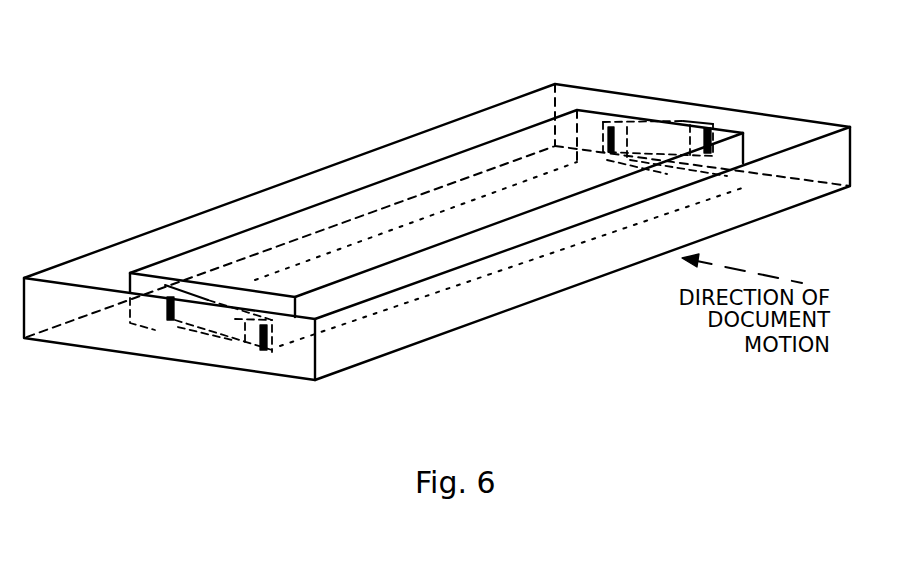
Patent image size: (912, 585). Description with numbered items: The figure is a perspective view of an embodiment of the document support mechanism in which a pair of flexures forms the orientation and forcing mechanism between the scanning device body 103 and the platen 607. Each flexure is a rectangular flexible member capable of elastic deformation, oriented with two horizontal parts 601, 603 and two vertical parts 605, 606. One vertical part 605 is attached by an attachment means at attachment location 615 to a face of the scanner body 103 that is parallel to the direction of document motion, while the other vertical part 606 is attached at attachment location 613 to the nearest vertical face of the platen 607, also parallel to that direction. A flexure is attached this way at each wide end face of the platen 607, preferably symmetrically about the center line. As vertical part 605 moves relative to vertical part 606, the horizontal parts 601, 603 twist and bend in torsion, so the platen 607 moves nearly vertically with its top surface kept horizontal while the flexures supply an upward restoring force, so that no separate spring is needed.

The scanning device body 103 is at (357, 154).
The platen 607 is at (297, 211).
The horizontal part 601 is at (199, 338).
The horizontal part 603 is at (225, 308).
The vertical part 605 is at (248, 340).
The vertical part 606 is at (172, 323).
The attachment location 613 is at (167, 321).
The attachment location 615 is at (268, 352).